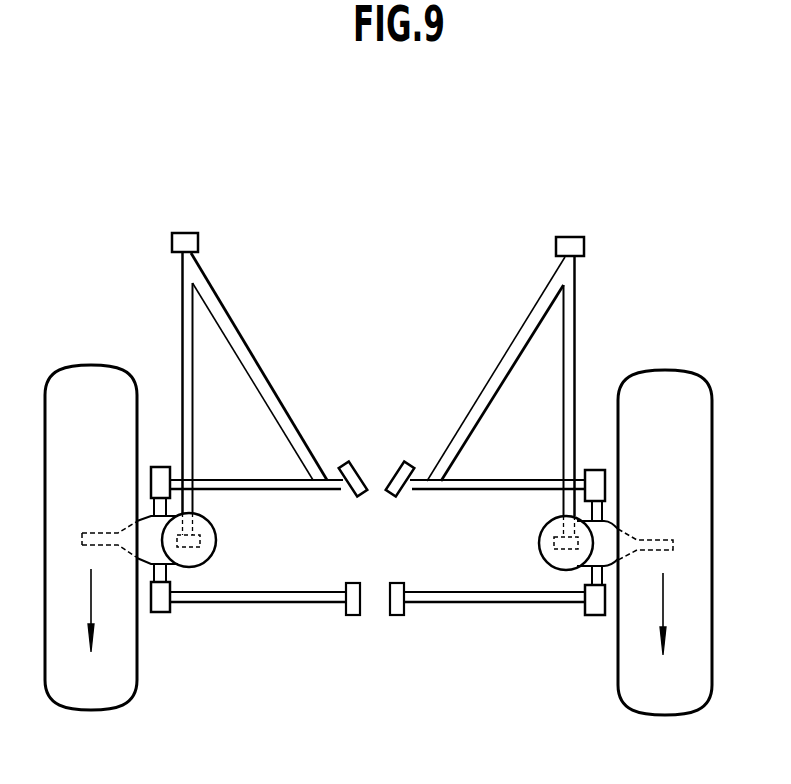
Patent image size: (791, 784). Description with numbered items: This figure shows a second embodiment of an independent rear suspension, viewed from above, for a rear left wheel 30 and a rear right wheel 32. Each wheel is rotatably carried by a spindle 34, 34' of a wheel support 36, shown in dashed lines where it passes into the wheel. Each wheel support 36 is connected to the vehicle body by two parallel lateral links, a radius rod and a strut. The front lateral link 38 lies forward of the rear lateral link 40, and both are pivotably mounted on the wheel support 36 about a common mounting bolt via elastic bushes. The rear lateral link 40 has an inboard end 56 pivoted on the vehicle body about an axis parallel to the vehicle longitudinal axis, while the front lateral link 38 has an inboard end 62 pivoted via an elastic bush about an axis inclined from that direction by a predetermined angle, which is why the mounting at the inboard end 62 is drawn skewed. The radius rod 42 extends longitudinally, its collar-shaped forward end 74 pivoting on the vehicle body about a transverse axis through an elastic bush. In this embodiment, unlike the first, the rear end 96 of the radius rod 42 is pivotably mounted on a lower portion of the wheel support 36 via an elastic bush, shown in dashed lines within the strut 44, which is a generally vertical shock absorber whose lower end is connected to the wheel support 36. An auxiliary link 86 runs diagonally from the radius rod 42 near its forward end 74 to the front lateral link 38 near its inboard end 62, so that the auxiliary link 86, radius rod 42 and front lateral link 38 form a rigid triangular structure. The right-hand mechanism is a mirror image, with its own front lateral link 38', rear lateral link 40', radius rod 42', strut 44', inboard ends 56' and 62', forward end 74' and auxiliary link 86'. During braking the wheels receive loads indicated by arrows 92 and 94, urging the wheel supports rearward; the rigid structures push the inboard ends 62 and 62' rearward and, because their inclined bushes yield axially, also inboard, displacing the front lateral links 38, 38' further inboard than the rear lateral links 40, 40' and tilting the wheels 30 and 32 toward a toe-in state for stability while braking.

The rear left wheel 30 is at (123, 697).
The rear right wheel 32 is at (640, 701).
The spindle 34 is at (106, 520).
The spindle 34' is at (652, 525).
The wheel support 36 is at (143, 559).
The front lateral link 38 is at (256, 506).
The front lateral link 38' is at (497, 507).
The rear lateral link 40 is at (258, 619).
The rear lateral link 40' is at (494, 619).
The radius rod 42 is at (161, 393).
The radius rod 42' is at (598, 396).
The strut 44 is at (217, 549).
The strut 44' is at (531, 550).
The inboard end 56 is at (359, 625).
The inboard end 56' is at (412, 625).
The inboard end 62 is at (356, 458).
The inboard end 62' is at (407, 458).
The forward end 74 is at (212, 246).
The forward end 74' is at (543, 247).
The auxiliary link 86 is at (259, 366).
The auxiliary link 86' is at (496, 369).
The arrow 92 is at (90, 607).
The arrow 94 is at (665, 612).
The rear end 96 is at (200, 540).